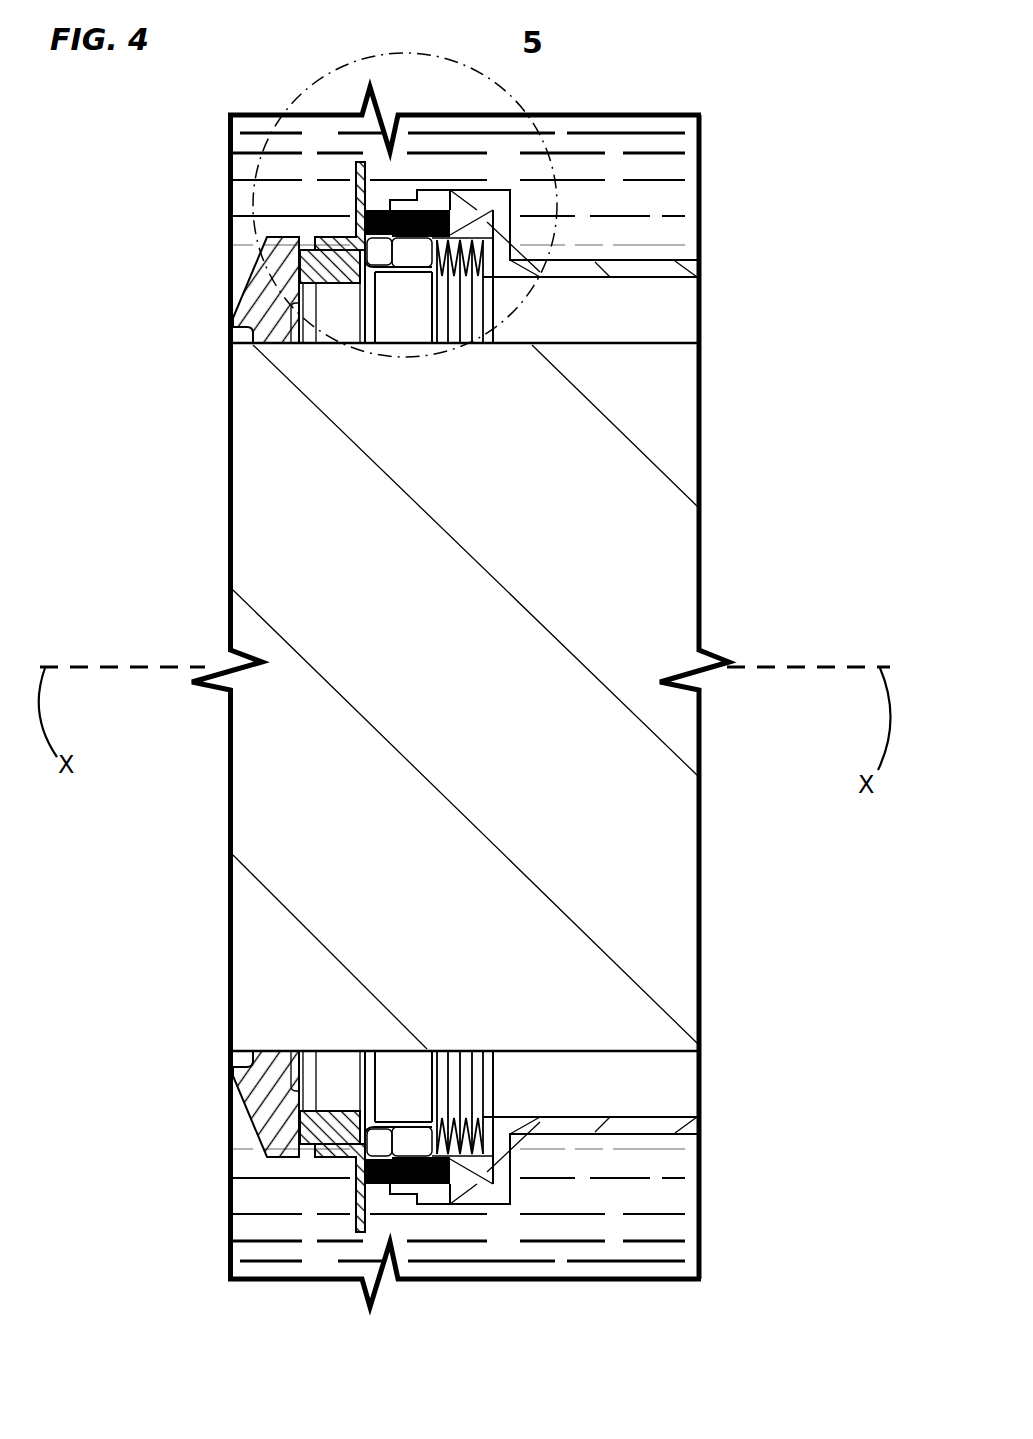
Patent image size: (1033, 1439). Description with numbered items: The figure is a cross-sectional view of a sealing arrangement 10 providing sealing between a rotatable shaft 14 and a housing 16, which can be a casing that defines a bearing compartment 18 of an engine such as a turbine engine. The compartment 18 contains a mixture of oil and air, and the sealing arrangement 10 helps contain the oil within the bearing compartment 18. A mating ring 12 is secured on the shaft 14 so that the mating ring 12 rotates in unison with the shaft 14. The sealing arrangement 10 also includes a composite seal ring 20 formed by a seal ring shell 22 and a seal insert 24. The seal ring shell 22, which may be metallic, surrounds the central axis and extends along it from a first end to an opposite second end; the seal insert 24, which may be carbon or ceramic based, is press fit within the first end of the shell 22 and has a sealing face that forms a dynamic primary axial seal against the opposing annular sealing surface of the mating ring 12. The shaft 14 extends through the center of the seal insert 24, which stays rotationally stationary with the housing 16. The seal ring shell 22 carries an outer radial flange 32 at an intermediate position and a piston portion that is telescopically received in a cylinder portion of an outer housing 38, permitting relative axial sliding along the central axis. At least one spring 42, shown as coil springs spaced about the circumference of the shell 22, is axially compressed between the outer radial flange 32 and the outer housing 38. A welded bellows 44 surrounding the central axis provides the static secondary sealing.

The sealing arrangement 10 is at (686, 80).
The mating ring 12 is at (243, 307).
The rotatable shaft 14 is at (226, 801).
The housing 16 is at (640, 270).
The bearing compartment 18 is at (578, 228).
The composite seal ring 20 is at (322, 203).
The seal ring shell 22 is at (352, 240).
The seal insert 24 is at (333, 273).
The outer radial flange 32 is at (358, 176).
The outer housing 38 is at (470, 225).
The spring 42 is at (381, 208).
The welded bellows 44 is at (470, 300).